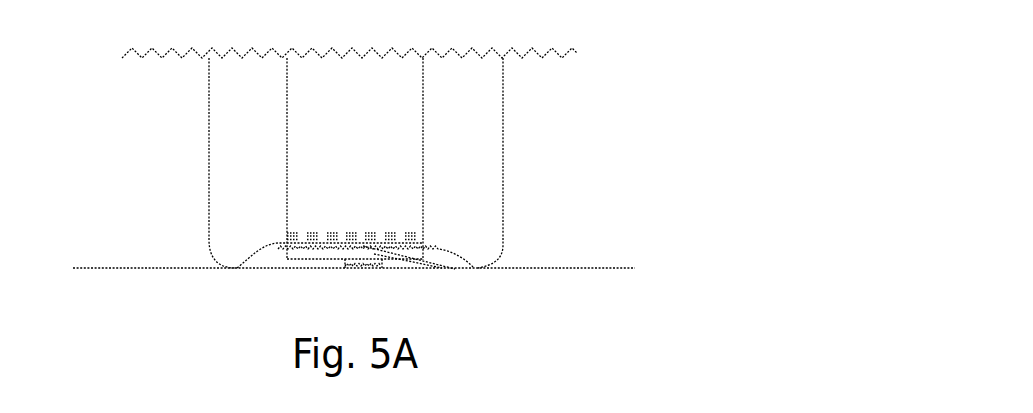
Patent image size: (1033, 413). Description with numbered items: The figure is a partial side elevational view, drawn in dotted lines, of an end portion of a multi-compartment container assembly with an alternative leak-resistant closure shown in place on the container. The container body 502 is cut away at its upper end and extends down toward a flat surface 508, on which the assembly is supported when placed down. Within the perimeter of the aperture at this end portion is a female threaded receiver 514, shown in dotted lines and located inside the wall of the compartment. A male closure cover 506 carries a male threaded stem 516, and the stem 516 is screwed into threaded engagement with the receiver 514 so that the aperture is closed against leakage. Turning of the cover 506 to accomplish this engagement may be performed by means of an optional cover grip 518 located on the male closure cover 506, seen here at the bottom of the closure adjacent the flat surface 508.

The housing 502 is at (505, 112).
The female threaded receiver 514 is at (423, 243).
The male threaded stem 516 is at (473, 267).
The male closure cover 506 is at (482, 268).
The flat surface 508 is at (577, 269).
The cover grip 518 is at (372, 270).